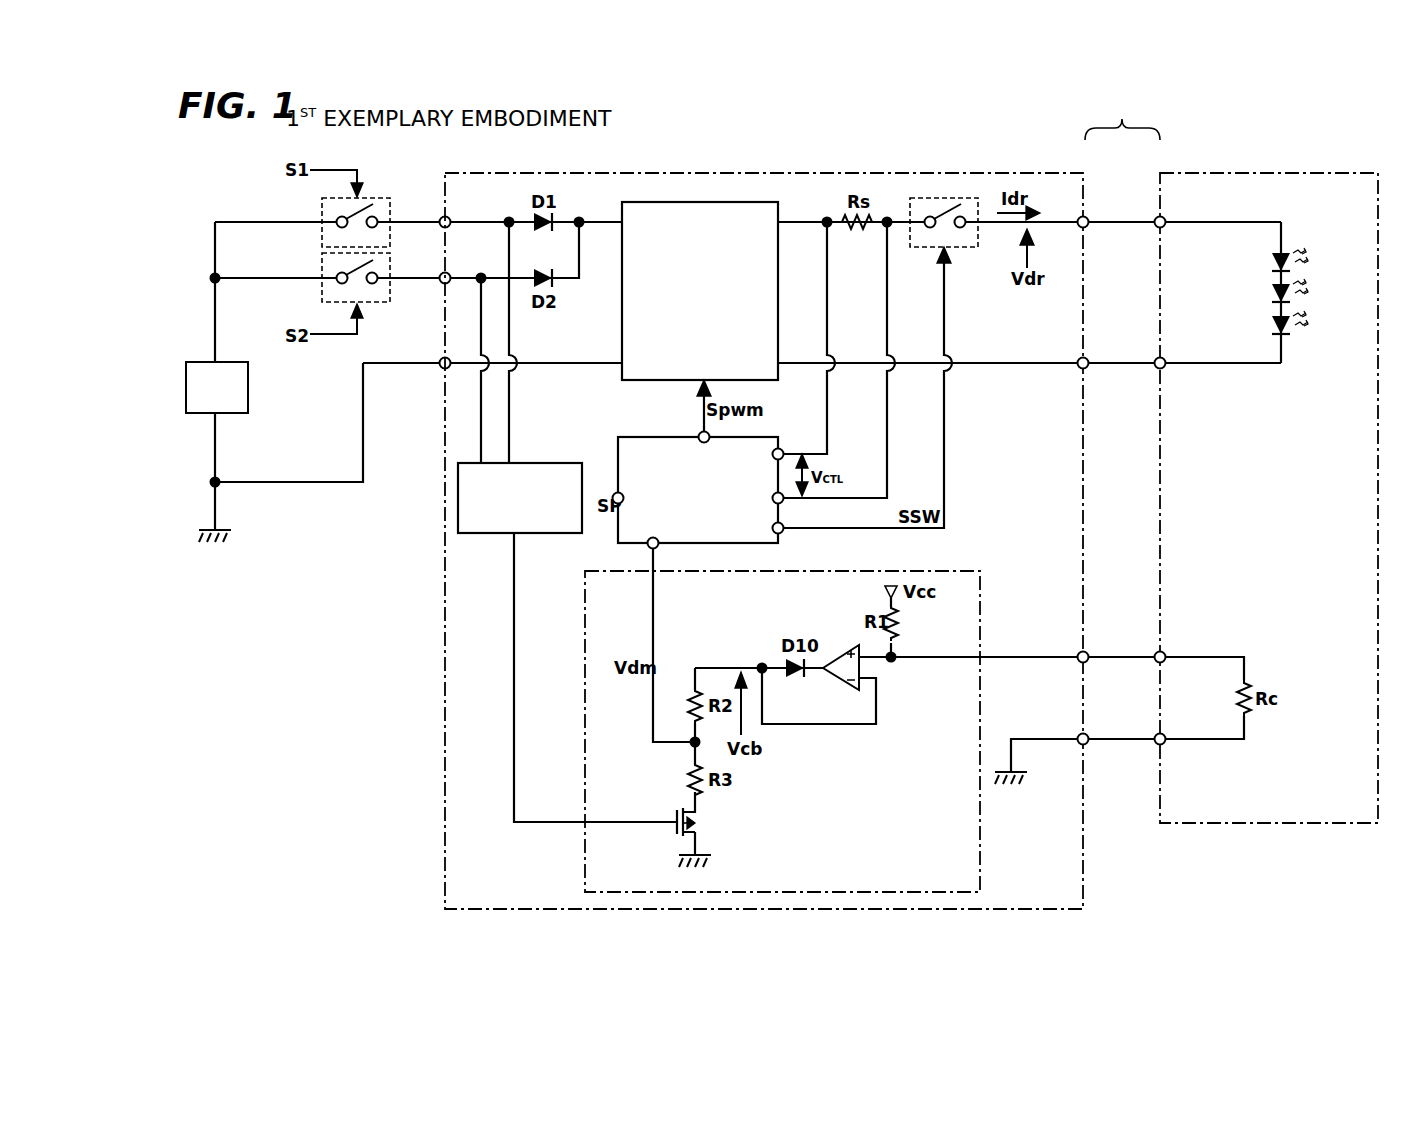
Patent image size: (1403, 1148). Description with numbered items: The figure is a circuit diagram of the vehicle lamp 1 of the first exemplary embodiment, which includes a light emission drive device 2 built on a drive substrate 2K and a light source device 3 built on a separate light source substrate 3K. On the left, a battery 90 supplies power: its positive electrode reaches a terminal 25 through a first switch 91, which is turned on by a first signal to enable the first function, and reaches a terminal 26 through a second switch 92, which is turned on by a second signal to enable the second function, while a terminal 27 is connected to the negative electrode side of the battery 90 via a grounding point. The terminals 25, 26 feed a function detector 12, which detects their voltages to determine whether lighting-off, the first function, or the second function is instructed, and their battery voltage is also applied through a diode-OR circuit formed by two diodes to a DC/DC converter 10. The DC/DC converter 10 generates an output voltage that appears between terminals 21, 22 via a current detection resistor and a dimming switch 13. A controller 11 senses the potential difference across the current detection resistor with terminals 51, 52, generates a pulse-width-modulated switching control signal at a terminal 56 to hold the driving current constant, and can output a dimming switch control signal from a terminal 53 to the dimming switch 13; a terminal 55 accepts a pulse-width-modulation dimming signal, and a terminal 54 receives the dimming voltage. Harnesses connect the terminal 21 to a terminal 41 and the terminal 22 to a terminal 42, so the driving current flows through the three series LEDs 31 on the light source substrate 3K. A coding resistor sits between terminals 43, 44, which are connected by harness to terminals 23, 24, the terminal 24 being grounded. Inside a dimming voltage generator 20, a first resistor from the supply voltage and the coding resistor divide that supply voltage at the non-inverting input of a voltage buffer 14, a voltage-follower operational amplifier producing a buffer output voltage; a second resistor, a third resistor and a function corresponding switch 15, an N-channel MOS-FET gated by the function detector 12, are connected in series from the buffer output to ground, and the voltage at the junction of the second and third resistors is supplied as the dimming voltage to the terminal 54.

The vehicle lamp 1 is at (1122, 116).
The light emission drive device 2 is at (1060, 173).
The light source device 3 is at (1182, 173).
The drive substrate 2K is at (788, 173).
The light source substrate 3K is at (1276, 173).
The DC/DC converter 10 is at (728, 202).
The controller 11 is at (626, 437).
The function detector 12 is at (497, 533).
The dimming switch 13 is at (968, 198).
The voltage buffer 14 is at (845, 650).
The function corresponding switch 15 is at (700, 820).
The dimming voltage generator 20 is at (978, 571).
The terminal 21 is at (1080, 226).
The terminal 22 is at (1082, 366).
The terminal 23 is at (1080, 655).
The terminal 24 is at (1080, 742).
The terminal 25 is at (443, 220).
The terminal 26 is at (443, 282).
The terminal 27 is at (443, 367).
The LED 31 is at (1268, 262).
The terminal 41 is at (1165, 221).
The terminal 42 is at (1163, 366).
The terminal 43 is at (1163, 655).
The terminal 44 is at (1163, 742).
The terminal 51 is at (782, 452).
The terminal 52 is at (782, 500).
The terminal 53 is at (782, 530).
The terminal 54 is at (650, 545).
The terminal 55 is at (615, 496).
The terminal 56 is at (702, 436).
The battery 90 is at (248, 387).
The first switch 91 is at (320, 208).
The second switch 92 is at (320, 264).